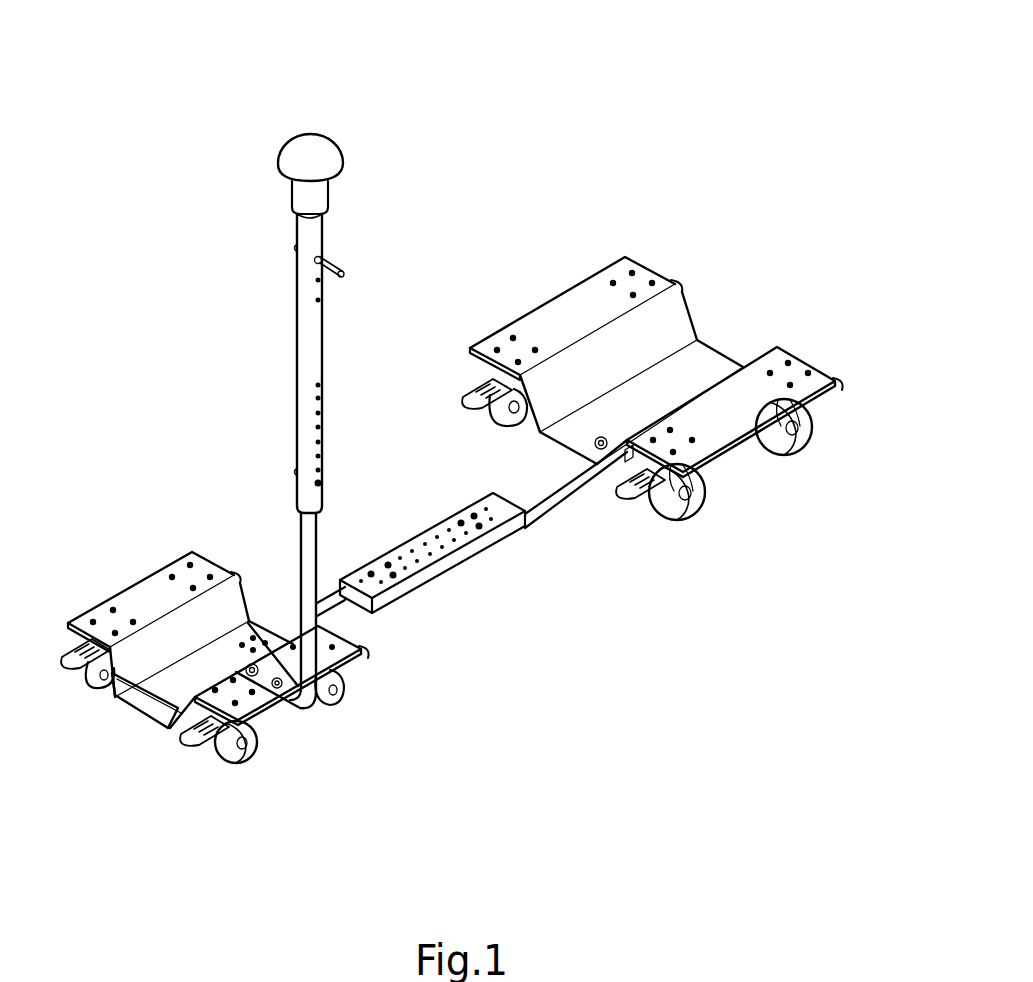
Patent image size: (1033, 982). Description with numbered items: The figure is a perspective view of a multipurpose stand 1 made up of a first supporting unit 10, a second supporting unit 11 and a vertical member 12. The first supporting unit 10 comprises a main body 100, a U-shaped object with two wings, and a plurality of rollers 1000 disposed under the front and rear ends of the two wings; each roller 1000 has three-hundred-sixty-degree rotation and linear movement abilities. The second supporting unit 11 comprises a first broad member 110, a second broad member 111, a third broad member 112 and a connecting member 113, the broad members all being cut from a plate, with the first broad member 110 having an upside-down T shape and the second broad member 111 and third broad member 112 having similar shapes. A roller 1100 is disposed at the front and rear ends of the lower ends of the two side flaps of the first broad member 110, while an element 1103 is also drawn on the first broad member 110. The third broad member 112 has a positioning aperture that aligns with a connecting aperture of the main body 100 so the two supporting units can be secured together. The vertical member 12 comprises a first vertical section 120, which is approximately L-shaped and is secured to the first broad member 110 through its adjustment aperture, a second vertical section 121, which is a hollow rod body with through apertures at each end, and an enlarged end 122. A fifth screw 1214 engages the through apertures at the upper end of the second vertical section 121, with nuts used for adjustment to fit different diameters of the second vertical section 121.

The multipurpose stand 1 is at (592, 92).
The first supporting unit 10 is at (575, 273).
The main body 100 is at (698, 312).
The rollers 1000 is at (797, 457).
The second supporting unit 11 is at (360, 693).
The second broad member 111 is at (497, 557).
The third broad member 112 is at (580, 487).
The connecting member 113 is at (358, 628).
The vertical member 12 is at (252, 360).
The first vertical section 120 is at (298, 521).
The second vertical section 121 is at (297, 321).
The fifth screw 1214 is at (337, 262).
The enlarged end 122 is at (291, 139).
The first broad member 110 is at (152, 730).
The roller 1100 is at (237, 758).
The ramp plate 1103 is at (112, 702).